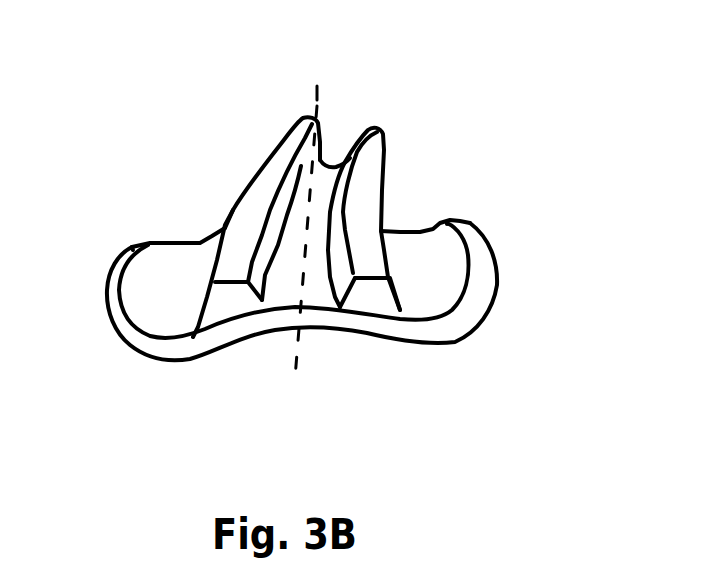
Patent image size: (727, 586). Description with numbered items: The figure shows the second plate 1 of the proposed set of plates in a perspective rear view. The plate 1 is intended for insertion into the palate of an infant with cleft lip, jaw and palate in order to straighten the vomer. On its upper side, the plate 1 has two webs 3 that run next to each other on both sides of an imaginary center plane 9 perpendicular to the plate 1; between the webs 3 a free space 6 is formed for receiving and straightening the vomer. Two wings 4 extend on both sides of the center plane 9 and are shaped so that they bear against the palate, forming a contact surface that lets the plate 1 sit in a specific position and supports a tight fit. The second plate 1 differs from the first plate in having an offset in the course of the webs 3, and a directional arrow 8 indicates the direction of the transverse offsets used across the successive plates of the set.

The plate 1 is at (183, 125).
The webs 3 is at (227, 295).
The wings 4 is at (157, 275).
The free space 6 is at (322, 292).
The directional arrow 8 is at (336, 22).
The center plane 9 is at (320, 94).